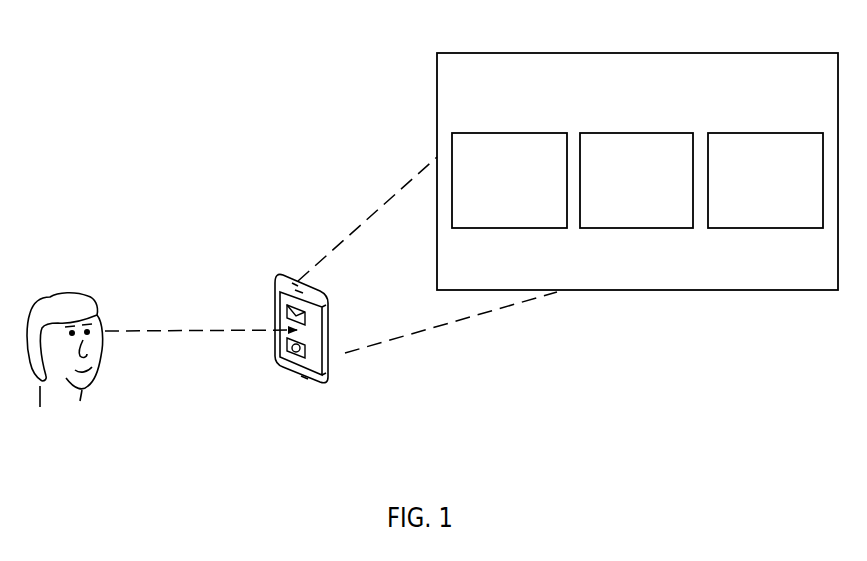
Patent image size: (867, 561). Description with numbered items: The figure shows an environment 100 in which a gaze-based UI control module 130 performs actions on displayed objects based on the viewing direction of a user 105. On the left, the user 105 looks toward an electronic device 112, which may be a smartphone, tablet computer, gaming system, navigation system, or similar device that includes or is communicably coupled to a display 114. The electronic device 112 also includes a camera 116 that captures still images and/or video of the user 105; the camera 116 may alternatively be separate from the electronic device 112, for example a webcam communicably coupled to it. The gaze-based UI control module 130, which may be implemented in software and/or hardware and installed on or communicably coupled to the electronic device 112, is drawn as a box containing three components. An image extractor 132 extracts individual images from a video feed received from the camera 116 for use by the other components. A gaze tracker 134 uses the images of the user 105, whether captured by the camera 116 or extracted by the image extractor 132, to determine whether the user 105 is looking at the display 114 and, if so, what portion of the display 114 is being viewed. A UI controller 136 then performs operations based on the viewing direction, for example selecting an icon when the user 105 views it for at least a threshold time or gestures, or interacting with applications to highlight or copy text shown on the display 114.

The environment 100 is at (106, 65).
The user 105 is at (60, 425).
The electronic device 112 is at (272, 380).
The display 114 is at (316, 366).
The camera 116 is at (292, 279).
The gaze-based UI control module 130 is at (637, 171).
The image extractor 132 is at (509, 180).
The gaze tracker 134 is at (636, 180).
The UI controller 136 is at (765, 180).